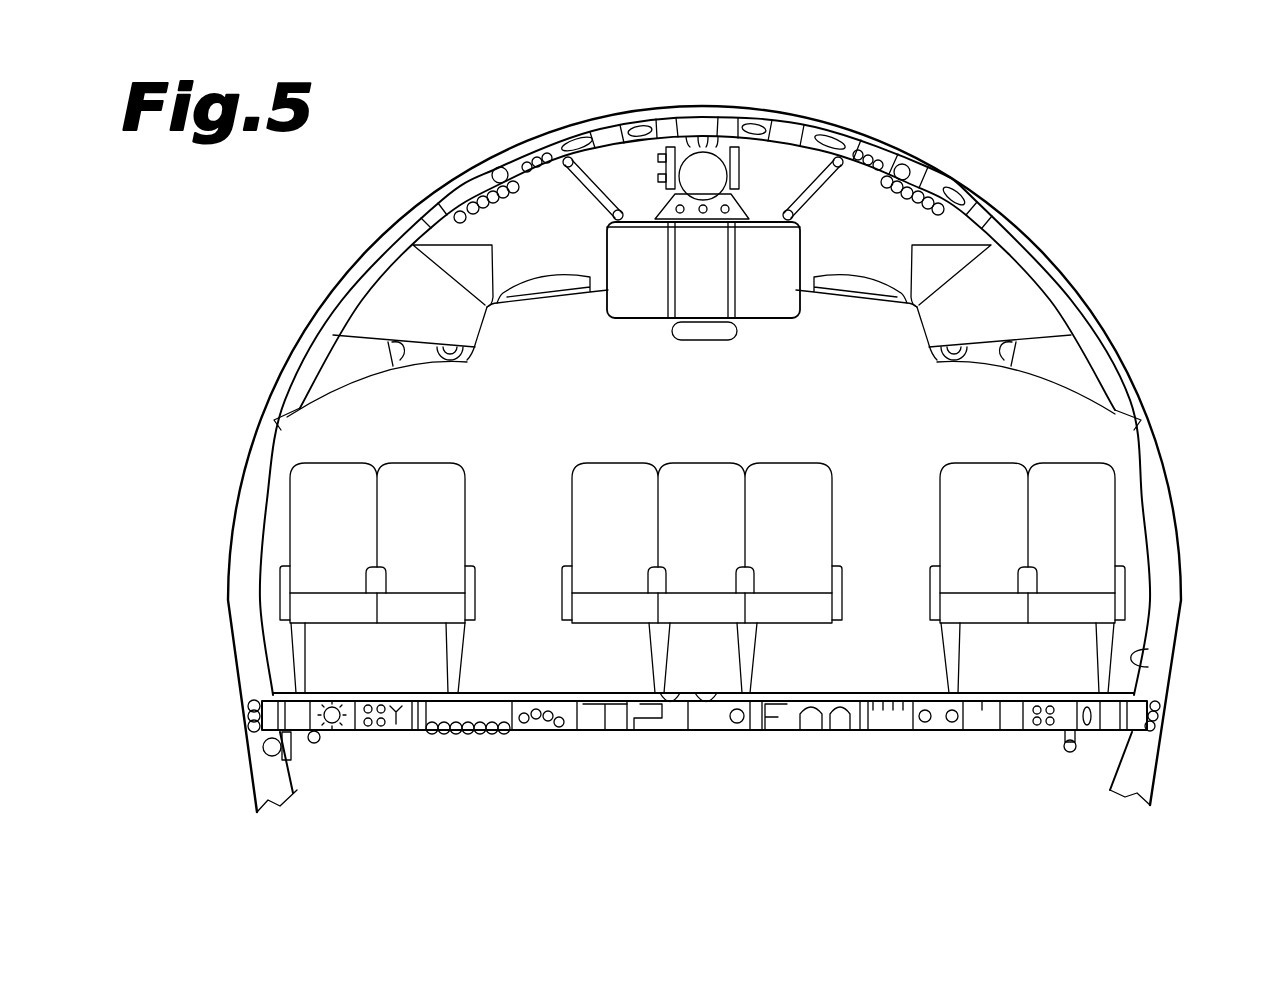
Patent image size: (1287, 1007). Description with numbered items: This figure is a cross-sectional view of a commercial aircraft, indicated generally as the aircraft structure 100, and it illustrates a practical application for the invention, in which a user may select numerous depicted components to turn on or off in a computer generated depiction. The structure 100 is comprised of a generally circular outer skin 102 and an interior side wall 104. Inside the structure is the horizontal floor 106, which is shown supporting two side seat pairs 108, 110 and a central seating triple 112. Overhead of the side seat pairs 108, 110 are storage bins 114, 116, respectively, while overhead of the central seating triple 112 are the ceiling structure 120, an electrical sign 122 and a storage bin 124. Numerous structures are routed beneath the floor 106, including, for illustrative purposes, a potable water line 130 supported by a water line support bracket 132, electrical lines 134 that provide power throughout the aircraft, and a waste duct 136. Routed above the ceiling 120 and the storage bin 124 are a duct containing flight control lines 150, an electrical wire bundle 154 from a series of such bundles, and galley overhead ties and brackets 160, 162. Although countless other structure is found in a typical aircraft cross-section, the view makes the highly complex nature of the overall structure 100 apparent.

The aircraft structure 100 is at (1254, 806).
The outer skin 102 is at (1182, 614).
The interior side wall 104 is at (1148, 664).
The horizontal floor 106 is at (822, 693).
The side seat pair 108 is at (467, 510).
The side seat pair 110 is at (940, 466).
The central seating triple 112 is at (683, 463).
The storage bin 114 is at (414, 372).
The storage bin 116 is at (982, 362).
The ceiling structure 120 is at (558, 300).
The electrical sign 122 is at (747, 320).
The storage bin 124 is at (633, 303).
The potable water line 130 is at (263, 749).
The water line support bracket 132 is at (291, 748).
The electrical lines 134 is at (490, 737).
The waste duct 136 is at (1068, 752).
The duct containing flight control lines 150 is at (714, 142).
The electrical wire bundle 154 is at (938, 195).
The galley overhead ties and brackets 160 is at (614, 134).
The galley overhead ties and brackets 162 is at (808, 162).